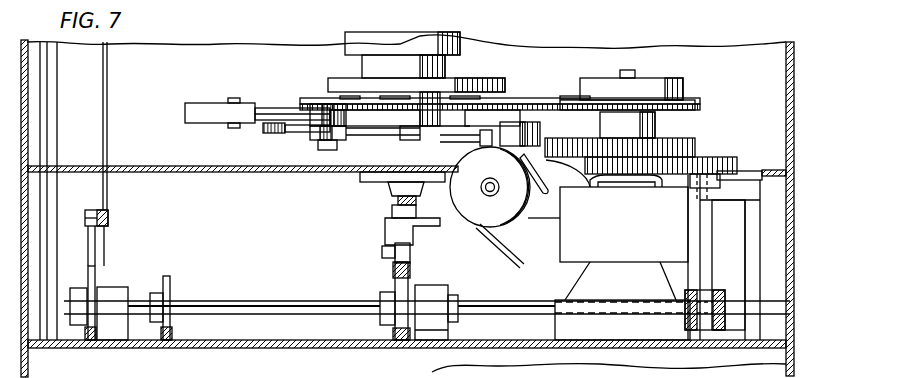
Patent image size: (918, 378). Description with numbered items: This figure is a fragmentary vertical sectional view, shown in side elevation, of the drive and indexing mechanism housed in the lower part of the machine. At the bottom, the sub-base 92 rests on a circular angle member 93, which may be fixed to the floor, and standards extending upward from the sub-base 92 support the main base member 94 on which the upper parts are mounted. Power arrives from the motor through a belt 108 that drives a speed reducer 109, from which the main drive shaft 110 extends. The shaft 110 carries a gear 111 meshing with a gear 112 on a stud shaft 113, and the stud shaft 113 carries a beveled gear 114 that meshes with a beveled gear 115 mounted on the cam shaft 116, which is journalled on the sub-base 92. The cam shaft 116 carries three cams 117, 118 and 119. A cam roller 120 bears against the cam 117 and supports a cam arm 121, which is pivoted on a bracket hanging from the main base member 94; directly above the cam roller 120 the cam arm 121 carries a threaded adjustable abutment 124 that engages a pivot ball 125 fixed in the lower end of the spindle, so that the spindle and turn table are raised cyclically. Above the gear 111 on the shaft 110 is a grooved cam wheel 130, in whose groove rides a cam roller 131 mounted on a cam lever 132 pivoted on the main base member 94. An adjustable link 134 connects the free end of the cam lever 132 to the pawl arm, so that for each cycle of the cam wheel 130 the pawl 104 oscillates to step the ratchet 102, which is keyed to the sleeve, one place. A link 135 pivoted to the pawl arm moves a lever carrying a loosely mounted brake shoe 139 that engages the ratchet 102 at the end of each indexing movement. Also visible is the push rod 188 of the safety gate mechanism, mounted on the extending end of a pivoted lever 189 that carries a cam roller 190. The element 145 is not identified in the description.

The sub-base 92 is at (140, 350).
The circular angle member 93 is at (62, 374).
The main base member 94 is at (221, 174).
The ratchet 102 is at (372, 138).
The pawl 104 is at (345, 140).
The belt 108 is at (508, 244).
The speed reducer 109 is at (572, 250).
The main drive shaft 110 is at (620, 175).
The gear 111 is at (640, 160).
The gear 112 is at (728, 160).
The stud shaft 113 is at (702, 222).
The beveled gear 114 is at (712, 270).
The beveled gear 115 is at (690, 332).
The cam shaft 116 is at (283, 282).
The cam 117 is at (395, 278).
The cam 118 is at (172, 278).
The cam 119 is at (95, 270).
The cam roller 120 is at (410, 249).
The cam arm 121 is at (413, 232).
The threaded adjustable abutment 124 is at (392, 214).
The pivot ball 125 is at (398, 203).
The grooved cam wheel 130 is at (504, 126).
The cam roller 131 is at (541, 123).
The cam lever 132 is at (558, 126).
The adjustable link 134 is at (392, 140).
The link 135 is at (246, 108).
The brake shoe 139 is at (270, 133).
The plate 145 is at (478, 100).
The push rod 188 is at (103, 80).
The pivoted lever 189 is at (106, 228).
The cam roller 190 is at (93, 212).